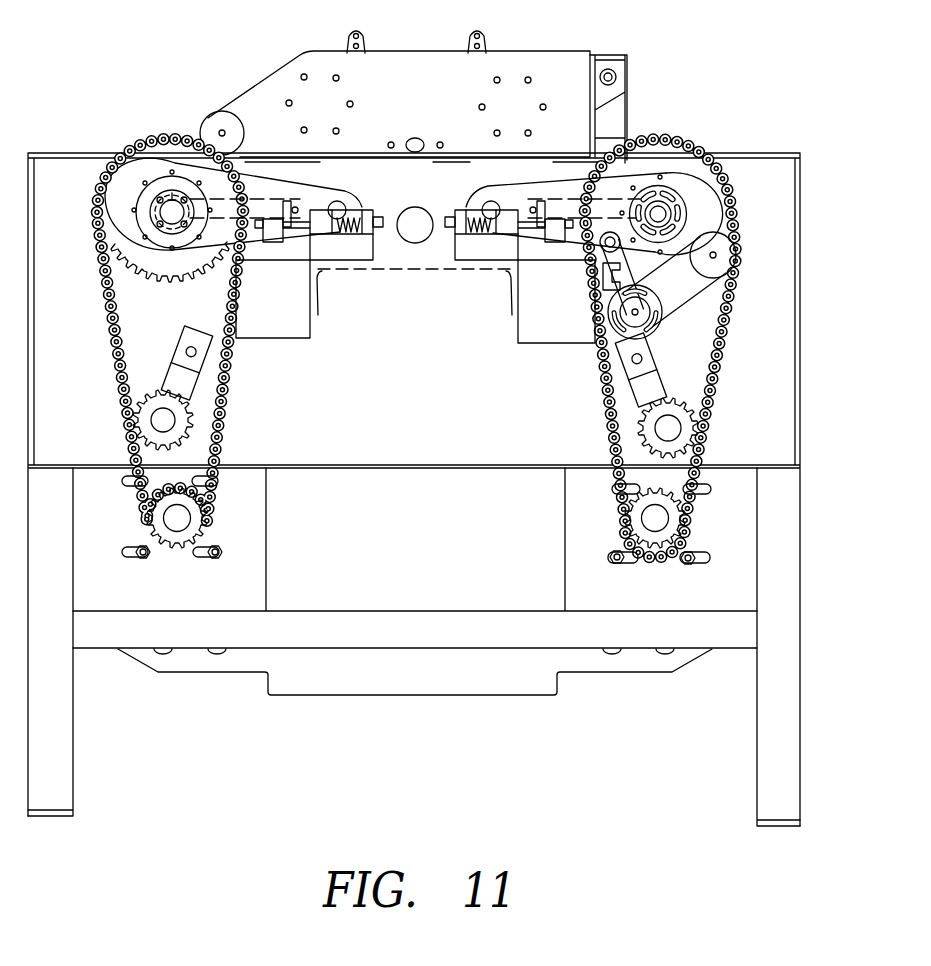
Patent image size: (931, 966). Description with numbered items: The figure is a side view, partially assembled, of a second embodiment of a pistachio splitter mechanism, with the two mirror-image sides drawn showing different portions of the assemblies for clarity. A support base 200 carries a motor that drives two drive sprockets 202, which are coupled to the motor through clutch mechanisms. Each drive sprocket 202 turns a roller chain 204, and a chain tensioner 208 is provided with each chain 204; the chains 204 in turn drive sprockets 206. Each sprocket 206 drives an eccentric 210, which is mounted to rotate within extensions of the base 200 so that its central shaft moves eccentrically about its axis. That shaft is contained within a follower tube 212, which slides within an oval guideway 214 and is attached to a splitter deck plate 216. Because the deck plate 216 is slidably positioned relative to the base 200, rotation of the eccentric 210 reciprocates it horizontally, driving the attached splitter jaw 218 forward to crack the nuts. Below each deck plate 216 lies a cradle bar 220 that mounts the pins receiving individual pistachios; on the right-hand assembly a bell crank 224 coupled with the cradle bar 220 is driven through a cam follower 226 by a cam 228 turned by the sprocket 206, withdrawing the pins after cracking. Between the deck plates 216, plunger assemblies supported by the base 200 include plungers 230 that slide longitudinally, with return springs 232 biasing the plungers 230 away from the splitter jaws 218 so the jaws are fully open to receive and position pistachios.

The support base 200 is at (803, 583).
The drive sprocket 202 is at (198, 517).
The roller chain 204 is at (708, 393).
The sprocket 206 is at (662, 160).
The chain tensioner 208 is at (143, 425).
The eccentric 210 is at (167, 213).
The follower tube 212 is at (172, 140).
The oval guideway 214 is at (182, 142).
The splitter deck plate 216 is at (240, 205).
The splitter jaw 218 is at (292, 198).
The cradle bar 220 is at (267, 250).
The bell crank 224 is at (670, 303).
The cam follower 226 is at (737, 233).
The cam 228 is at (698, 183).
The plunger 230 is at (380, 216).
The return spring 232 is at (347, 236).